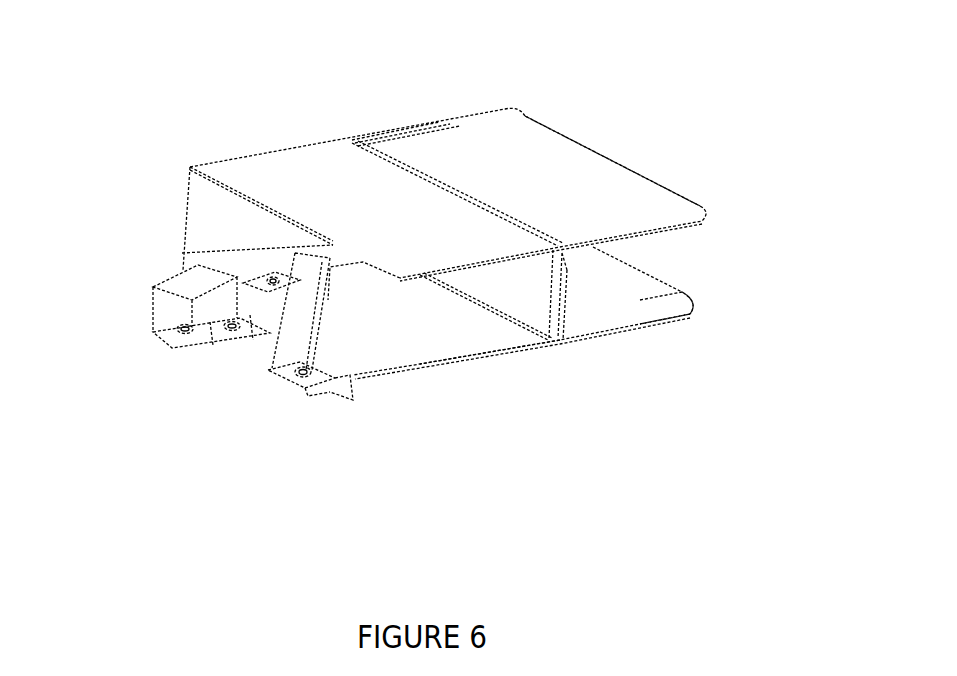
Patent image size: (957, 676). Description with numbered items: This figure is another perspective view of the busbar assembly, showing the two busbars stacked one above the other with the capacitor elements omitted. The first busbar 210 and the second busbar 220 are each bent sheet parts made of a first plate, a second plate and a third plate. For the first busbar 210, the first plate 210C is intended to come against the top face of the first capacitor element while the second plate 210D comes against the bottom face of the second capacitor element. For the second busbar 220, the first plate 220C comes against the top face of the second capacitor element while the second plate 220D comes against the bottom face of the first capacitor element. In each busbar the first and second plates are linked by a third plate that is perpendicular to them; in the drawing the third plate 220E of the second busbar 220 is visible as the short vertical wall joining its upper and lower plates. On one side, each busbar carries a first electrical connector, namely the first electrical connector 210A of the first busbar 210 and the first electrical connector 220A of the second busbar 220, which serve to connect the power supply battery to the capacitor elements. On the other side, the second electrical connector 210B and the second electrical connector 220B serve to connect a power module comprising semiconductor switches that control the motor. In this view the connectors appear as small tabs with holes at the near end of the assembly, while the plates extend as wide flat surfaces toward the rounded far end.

The second busbar 220 is at (651, 171).
The second plate of the second busbar 220D is at (543, 135).
The third plate of the second busbar 220E is at (528, 310).
The first plate of the second busbar 220C is at (455, 343).
The first electrical connector of the second busbar 220A is at (297, 387).
The second electrical connector of the second busbar 220B is at (163, 338).
The first busbar 210 is at (689, 293).
The first electrical connector of the first busbar 210A is at (275, 340).
The second electrical connector of the first busbar 210B is at (230, 343).
The first plate of the first busbar 210C is at (650, 300).
The second plate of the first busbar 210D is at (297, 168).